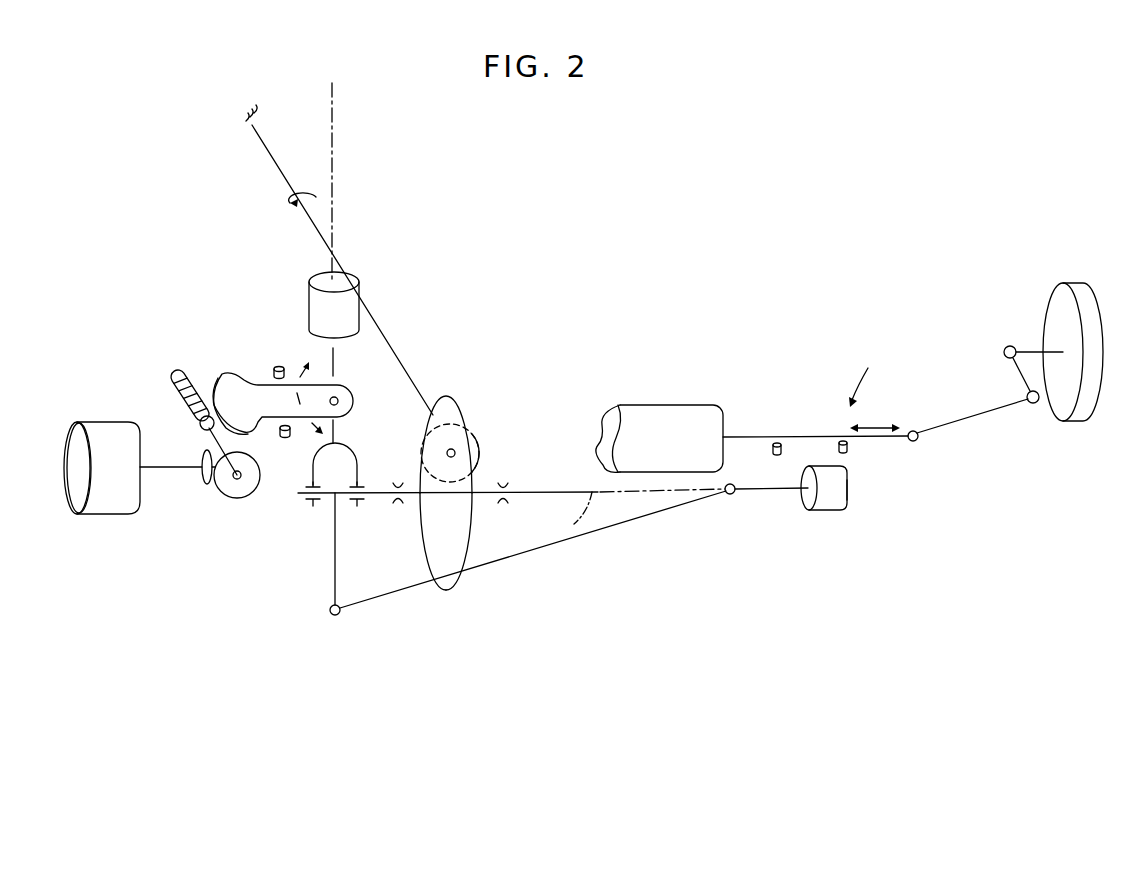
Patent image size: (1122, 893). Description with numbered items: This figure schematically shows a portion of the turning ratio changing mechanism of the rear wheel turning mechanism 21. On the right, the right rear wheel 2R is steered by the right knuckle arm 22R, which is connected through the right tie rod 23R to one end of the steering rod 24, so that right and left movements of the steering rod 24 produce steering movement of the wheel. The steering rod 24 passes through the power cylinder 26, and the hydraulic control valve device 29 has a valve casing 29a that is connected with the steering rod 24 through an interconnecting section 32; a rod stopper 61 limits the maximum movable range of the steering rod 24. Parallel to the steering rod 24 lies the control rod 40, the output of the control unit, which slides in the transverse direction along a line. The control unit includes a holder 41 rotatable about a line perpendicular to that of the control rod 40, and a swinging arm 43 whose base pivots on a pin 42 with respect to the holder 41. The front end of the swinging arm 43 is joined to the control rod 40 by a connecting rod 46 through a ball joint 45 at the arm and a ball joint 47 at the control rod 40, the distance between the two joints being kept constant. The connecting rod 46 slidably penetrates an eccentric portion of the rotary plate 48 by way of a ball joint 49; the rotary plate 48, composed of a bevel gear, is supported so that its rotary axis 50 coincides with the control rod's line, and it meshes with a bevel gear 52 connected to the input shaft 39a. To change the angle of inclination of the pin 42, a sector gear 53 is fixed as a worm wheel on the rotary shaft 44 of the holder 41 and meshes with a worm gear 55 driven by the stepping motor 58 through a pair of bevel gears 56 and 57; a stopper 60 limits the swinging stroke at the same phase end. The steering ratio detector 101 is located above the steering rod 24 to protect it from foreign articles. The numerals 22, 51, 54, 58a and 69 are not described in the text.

The right rear wheel 2R is at (1078, 421).
The rear wheel turning mechanism 21 is at (878, 377).
The steering axis 22 is at (336, 152).
The right knuckle arm 22R is at (1016, 370).
The right tie rod 23R is at (961, 420).
The steering rod 24 is at (753, 434).
The power cylinder 26 is at (658, 405).
The hydraulic control valve device 29 is at (824, 520).
The valve casing 29a is at (848, 498).
The interconnecting section 32 is at (851, 408).
The input shaft 39a is at (293, 155).
The control rod 40 is at (768, 492).
The holder 41 is at (310, 478).
The pin 42 is at (323, 505).
The swinging arm 43 is at (333, 585).
The rotary shaft 44 is at (335, 361).
The ball joint 45 is at (337, 618).
The connecting rod 46 is at (535, 550).
The ball joint 47 is at (730, 497).
The rotary plate 48 is at (468, 560).
The ball joint 49 is at (440, 598).
The rotary axis 50 is at (482, 497).
The disk 51 is at (445, 397).
The bevel gear 52 is at (483, 440).
The sector gear 53 is at (234, 375).
The arm 54 is at (218, 444).
The worm gear 55 is at (183, 374).
The bevel gear 56 is at (230, 499).
The bevel gear 57 is at (200, 490).
The stepping motor 58 is at (72, 520).
The motor shaft 58a is at (157, 471).
The stopper 60 is at (277, 366).
The rod stopper 61 is at (772, 450).
The stopper pin 69 is at (284, 440).
The steering ratio detector 101 is at (360, 280).